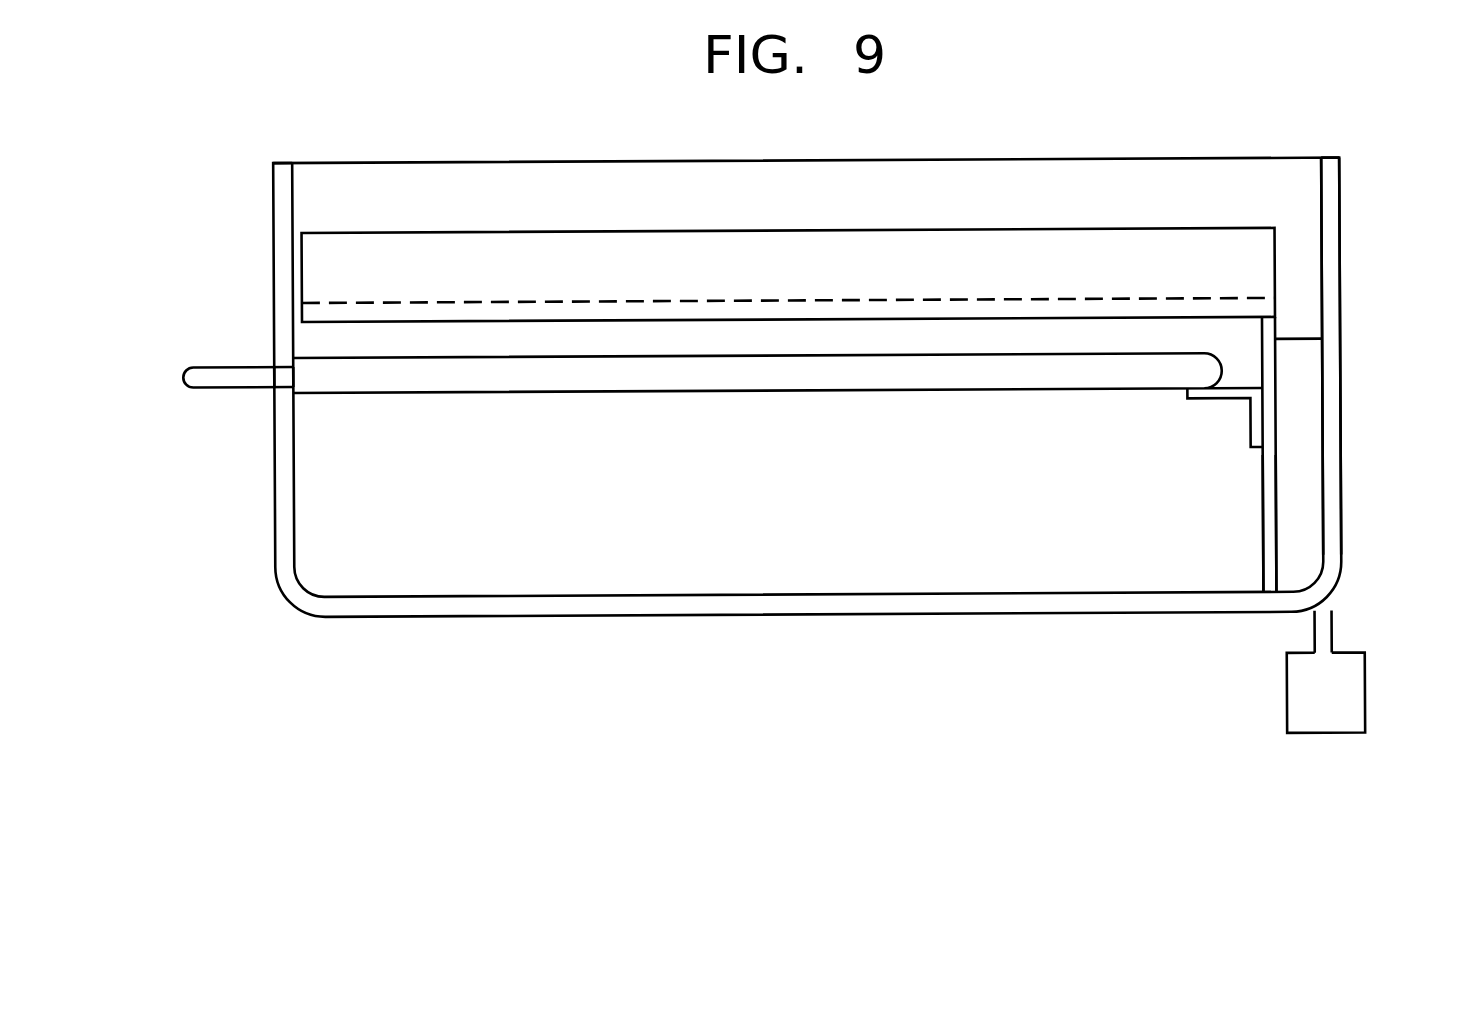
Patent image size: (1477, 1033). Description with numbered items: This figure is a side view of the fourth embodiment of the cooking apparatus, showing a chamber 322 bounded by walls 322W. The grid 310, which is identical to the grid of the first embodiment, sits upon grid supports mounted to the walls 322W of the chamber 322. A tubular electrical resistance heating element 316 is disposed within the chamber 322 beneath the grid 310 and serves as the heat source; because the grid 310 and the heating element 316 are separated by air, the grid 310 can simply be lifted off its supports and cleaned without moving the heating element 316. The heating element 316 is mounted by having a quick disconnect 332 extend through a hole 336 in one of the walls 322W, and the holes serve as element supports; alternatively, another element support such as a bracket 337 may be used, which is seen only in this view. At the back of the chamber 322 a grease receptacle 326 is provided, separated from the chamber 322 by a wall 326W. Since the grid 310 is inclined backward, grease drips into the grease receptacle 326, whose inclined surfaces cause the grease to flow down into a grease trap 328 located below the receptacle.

The grid 310 is at (578, 231).
The tubular electrical resistance heating element 316 is at (655, 385).
The chamber 322 is at (553, 567).
The wall of chamber 322W is at (1330, 268).
The grease receptacle 326 is at (1303, 417).
The wall 326W is at (1277, 528).
The grease trap 328 is at (1320, 682).
The quick disconnect 332 is at (235, 373).
The hole 336 is at (272, 395).
The bracket 337 is at (1213, 393).